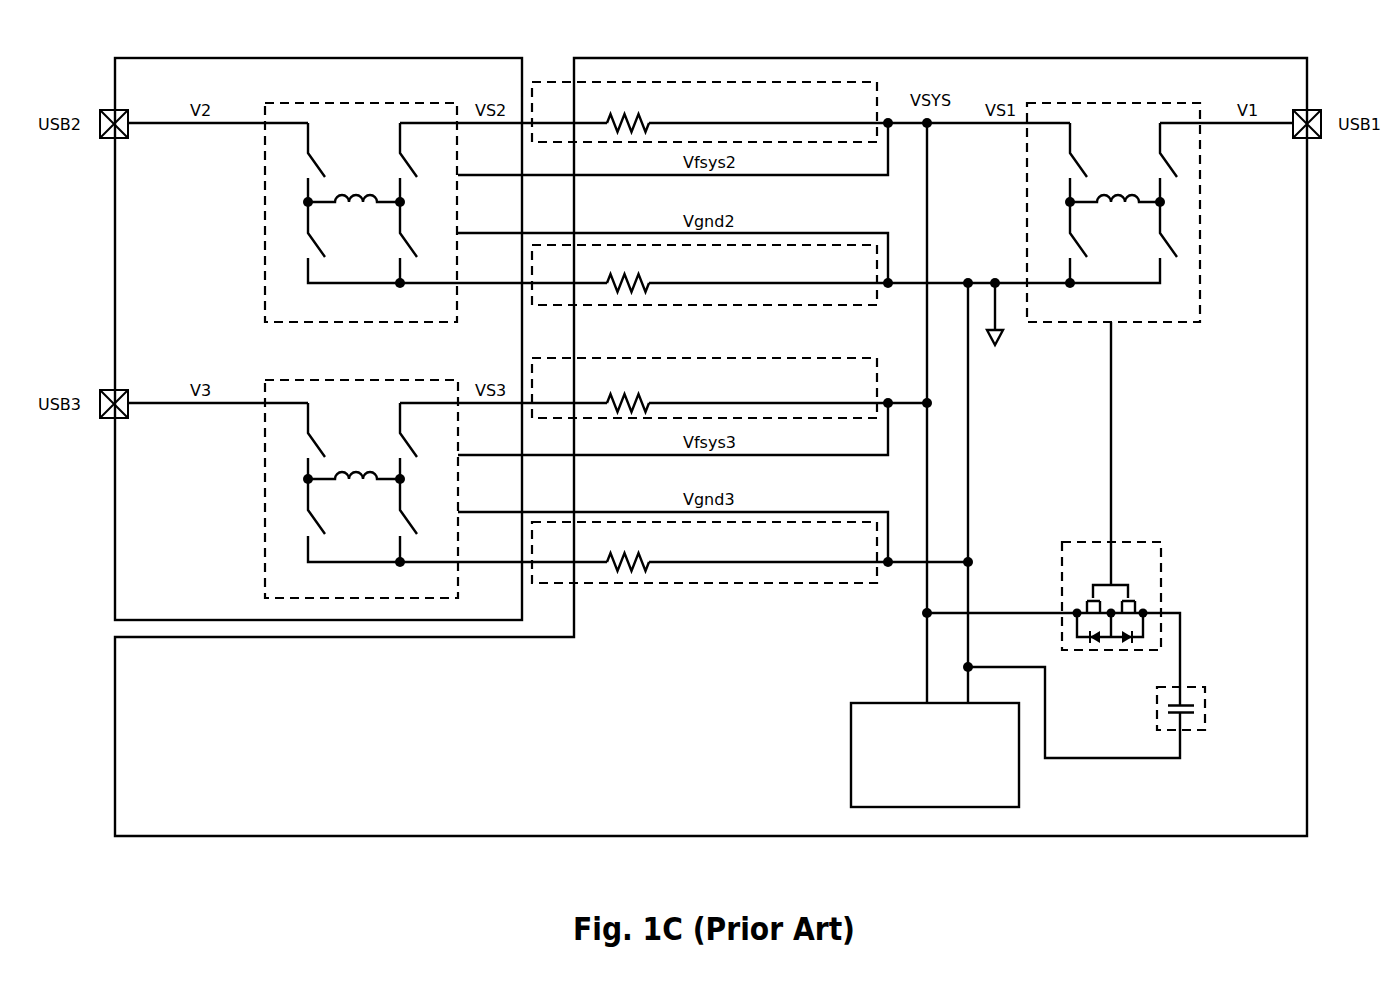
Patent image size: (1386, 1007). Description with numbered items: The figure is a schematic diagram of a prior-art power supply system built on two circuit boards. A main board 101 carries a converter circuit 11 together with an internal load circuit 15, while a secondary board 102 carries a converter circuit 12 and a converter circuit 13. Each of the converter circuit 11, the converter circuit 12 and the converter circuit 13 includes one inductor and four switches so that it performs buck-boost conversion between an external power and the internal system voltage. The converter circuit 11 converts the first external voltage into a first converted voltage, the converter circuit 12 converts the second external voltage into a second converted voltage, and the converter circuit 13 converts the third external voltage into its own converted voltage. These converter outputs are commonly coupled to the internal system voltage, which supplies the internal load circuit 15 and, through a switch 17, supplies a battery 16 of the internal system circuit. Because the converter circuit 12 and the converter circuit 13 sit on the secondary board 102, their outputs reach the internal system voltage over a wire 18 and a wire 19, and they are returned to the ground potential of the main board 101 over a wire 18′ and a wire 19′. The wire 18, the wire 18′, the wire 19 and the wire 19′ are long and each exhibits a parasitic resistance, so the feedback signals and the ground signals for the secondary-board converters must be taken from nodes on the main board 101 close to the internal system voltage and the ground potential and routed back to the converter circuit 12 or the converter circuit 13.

The main board 101 is at (1247, 55).
The secondary board 102 is at (472, 55).
The converter circuit 11 is at (1152, 100).
The converter circuit 12 is at (418, 102).
The converter circuit 13 is at (420, 379).
The internal load circuit 15 is at (925, 792).
The battery 16 is at (1170, 686).
The switch 17 is at (1159, 564).
The wire 18 is at (865, 103).
The wire 18′ is at (868, 263).
The wire 19 is at (865, 383).
The wire 19′ is at (868, 543).